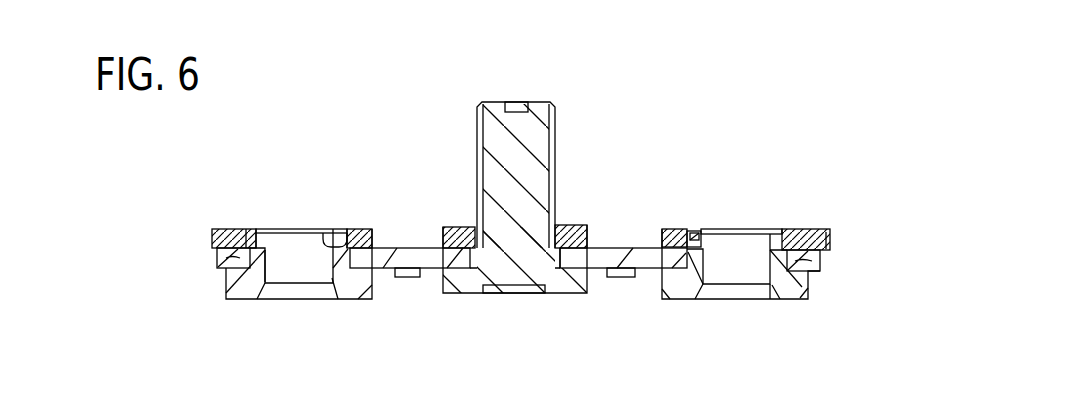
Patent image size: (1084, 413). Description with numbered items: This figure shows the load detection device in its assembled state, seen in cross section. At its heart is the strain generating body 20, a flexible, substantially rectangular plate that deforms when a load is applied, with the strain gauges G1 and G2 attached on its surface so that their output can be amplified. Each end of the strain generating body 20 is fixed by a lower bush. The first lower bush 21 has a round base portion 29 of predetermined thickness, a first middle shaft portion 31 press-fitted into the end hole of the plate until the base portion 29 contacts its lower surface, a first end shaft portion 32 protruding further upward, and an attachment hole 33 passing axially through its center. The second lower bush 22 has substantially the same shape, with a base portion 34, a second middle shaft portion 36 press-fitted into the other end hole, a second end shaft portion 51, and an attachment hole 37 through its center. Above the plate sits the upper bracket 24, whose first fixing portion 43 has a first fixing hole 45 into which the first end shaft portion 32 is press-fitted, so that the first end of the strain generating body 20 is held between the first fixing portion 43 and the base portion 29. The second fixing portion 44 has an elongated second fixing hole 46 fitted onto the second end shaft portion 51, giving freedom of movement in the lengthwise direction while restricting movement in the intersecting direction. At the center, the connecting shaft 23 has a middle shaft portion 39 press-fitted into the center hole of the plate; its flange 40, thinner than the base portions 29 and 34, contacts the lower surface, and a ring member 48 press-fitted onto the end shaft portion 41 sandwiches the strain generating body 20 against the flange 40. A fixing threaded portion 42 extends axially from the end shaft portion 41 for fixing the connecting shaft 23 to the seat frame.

The strain generating body 20 is at (416, 255).
The first lower bush 21 is at (271, 272).
The second lower bush 22 is at (770, 269).
The connecting shaft 23 is at (528, 229).
The upper bracket 24 is at (358, 229).
The base portion 29 is at (232, 292).
The first middle shaft portion 31 is at (217, 258).
The first end shaft portion 32 is at (253, 243).
The attachment hole 33 is at (266, 258).
The base portion 34 is at (802, 285).
The second middle shaft portion 36 is at (800, 258).
The attachment hole 37 is at (747, 230).
The middle shaft portion 39 is at (563, 267).
The flange 40 is at (555, 284).
The end shaft portion 41 is at (573, 242).
The fixing threaded portion 42 is at (541, 133).
The first fixing portion 43 is at (212, 242).
The second fixing portion 44 is at (828, 236).
The first fixing hole 45 is at (327, 240).
The second fixing hole 46 is at (697, 233).
The ring member 48 is at (460, 238).
The second end shaft portion 51 is at (833, 241).
The strain gauge G1 is at (405, 278).
The strain gauge G2 is at (618, 278).